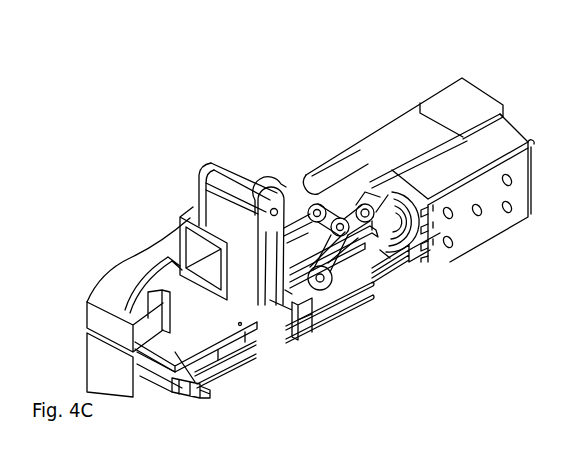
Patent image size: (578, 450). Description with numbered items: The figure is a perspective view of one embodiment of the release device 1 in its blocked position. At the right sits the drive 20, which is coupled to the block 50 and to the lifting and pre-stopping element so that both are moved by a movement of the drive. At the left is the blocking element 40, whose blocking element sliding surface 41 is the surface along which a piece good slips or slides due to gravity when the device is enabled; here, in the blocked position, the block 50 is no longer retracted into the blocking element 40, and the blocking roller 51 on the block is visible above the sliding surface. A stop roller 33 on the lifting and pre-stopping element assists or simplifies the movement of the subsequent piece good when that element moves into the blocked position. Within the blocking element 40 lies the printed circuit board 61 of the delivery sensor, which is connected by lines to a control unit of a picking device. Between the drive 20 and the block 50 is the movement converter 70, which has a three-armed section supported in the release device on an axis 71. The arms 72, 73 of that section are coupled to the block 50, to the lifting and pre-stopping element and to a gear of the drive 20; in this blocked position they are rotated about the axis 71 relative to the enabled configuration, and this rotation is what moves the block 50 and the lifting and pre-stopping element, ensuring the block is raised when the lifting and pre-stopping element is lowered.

The apparatus 1 is at (3, 151).
The drive 20 is at (448, 170).
The stop roller 33 is at (333, 178).
The blocking element 40 is at (135, 270).
The blocking element sliding surface 41 is at (200, 220).
The block 50 is at (205, 203).
The blocking roller 51 is at (237, 180).
The printed circuit board 61 is at (192, 384).
The movement converter 70 is at (292, 168).
The axis 71 is at (330, 288).
The arm 72 is at (375, 272).
The arm 73 is at (300, 288).